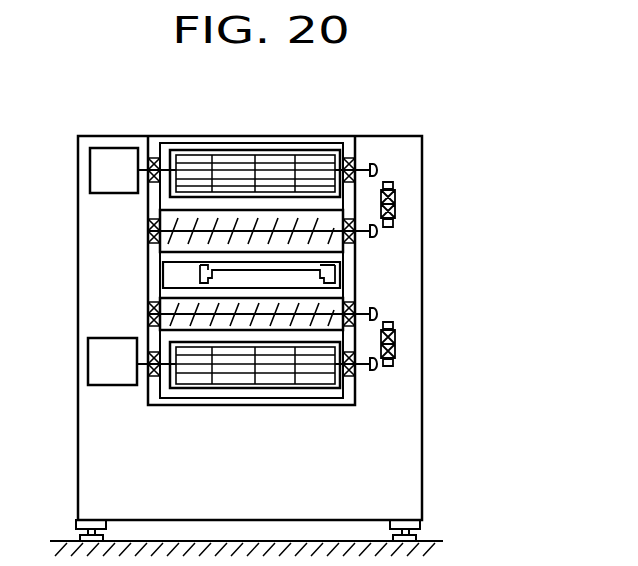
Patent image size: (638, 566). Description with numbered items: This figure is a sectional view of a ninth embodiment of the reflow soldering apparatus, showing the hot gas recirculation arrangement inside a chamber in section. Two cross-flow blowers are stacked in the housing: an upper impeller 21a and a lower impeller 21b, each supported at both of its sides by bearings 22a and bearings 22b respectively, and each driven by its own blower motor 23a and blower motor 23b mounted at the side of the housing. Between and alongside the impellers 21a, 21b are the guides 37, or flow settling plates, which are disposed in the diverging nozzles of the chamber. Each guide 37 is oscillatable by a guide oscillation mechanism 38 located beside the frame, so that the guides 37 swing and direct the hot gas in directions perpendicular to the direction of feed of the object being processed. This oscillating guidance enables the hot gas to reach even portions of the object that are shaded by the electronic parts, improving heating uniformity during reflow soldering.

The impeller 21a is at (247, 152).
The impeller 21b is at (262, 388).
The bearings 22a is at (152, 158).
The bearings 22b is at (152, 376).
The blower motor 23a is at (104, 148).
The blower motor 23b is at (107, 385).
The guide 37 is at (182, 230).
The guide oscillation mechanism 38 is at (392, 183).